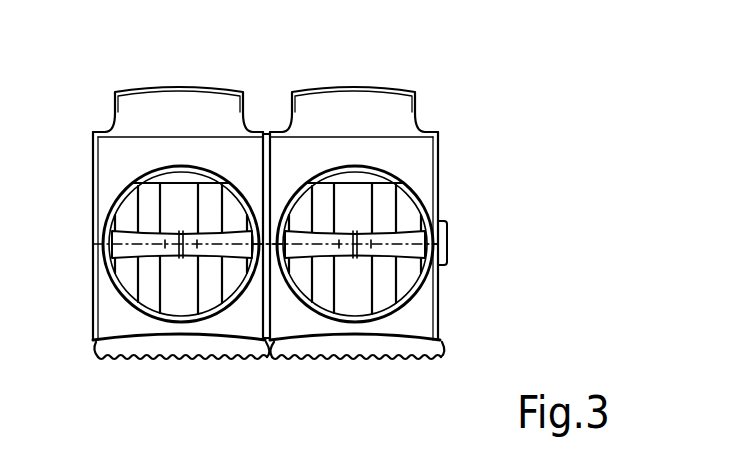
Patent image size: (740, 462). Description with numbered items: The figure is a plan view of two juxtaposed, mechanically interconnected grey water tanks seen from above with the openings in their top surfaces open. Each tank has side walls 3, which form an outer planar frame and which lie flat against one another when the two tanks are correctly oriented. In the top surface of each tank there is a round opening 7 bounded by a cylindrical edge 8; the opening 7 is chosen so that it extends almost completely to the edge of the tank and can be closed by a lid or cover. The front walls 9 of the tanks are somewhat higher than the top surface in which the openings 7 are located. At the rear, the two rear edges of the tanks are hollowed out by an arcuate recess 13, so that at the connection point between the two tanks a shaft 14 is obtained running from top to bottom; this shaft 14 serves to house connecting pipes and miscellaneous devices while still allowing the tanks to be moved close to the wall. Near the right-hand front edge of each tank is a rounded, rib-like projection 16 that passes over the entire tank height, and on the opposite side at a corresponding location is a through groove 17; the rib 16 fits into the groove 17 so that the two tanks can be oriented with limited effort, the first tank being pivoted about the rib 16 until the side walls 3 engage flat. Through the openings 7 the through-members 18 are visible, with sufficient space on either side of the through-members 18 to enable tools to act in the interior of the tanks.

The side walls 3 is at (438, 137).
The round opening 7 is at (400, 200).
The cylindrical edge 8 is at (420, 282).
The front walls 9 is at (195, 360).
The arcuate recess 13 is at (420, 121).
The shaft 14 is at (268, 121).
The rib-like projection 16 is at (443, 341).
The through groove 17 is at (98, 342).
The through-members 18 is at (445, 257).